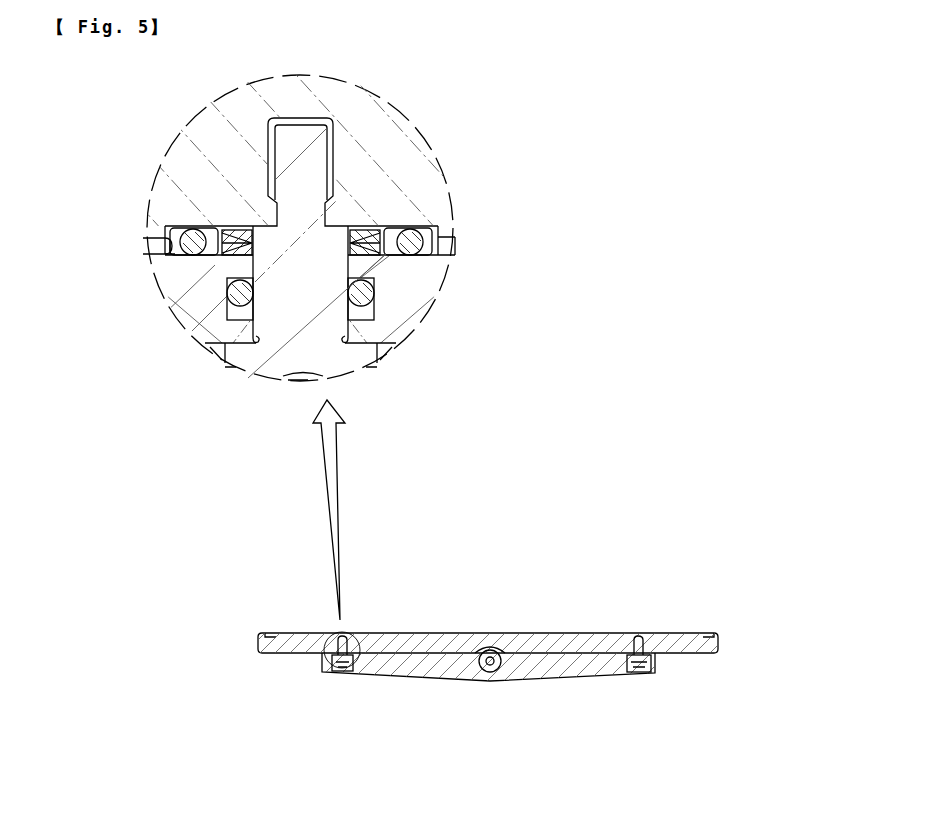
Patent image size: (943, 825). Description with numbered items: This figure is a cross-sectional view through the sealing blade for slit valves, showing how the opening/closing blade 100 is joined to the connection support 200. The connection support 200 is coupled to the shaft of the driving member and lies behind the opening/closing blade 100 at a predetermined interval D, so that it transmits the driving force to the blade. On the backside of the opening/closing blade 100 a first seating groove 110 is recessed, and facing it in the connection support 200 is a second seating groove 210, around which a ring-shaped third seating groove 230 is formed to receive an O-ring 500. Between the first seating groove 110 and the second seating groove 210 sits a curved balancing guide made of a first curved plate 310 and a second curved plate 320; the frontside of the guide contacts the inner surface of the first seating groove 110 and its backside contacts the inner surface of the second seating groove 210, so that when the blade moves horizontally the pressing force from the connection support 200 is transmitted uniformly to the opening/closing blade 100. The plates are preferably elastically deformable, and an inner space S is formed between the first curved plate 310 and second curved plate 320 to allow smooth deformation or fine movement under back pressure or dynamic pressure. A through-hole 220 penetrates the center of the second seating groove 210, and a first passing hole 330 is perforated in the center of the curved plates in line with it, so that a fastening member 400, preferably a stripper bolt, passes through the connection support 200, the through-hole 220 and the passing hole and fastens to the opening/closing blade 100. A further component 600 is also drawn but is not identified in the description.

The opening/closing blade 100 is at (592, 640).
The connection support 200 is at (563, 668).
The first seating groove 110 is at (165, 227).
The predetermined interval D is at (447, 245).
The third seating groove 230 is at (165, 240).
The second seating groove 210 is at (218, 255).
The O-ring 500 is at (194, 227).
The first passing hole 330 is at (350, 227).
The first curved plate 310 is at (370, 227).
The lower bearing 600 is at (226, 293).
The second curved plate 320 is at (383, 253).
The through-hole 220 is at (207, 357).
The fastening member 400 is at (293, 316).
The inner space S is at (423, 255).